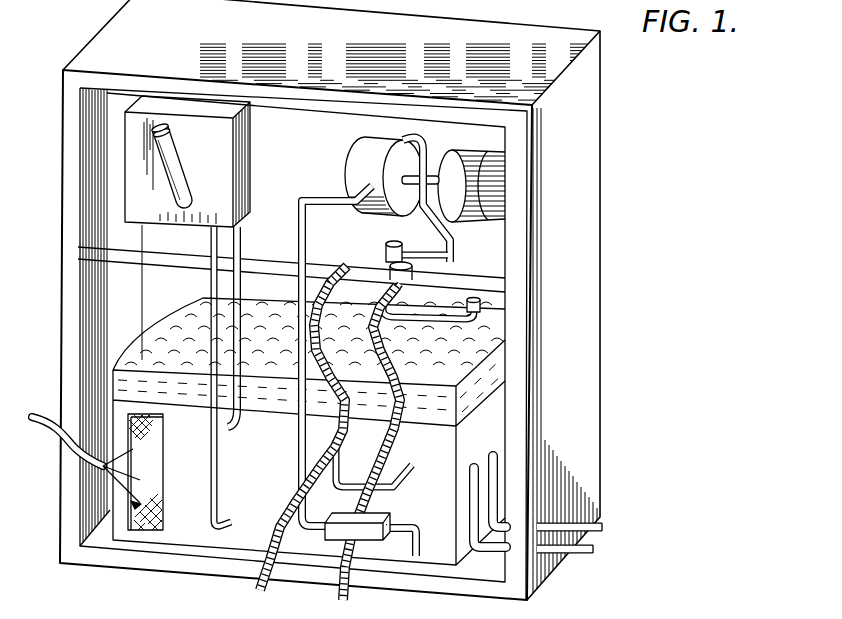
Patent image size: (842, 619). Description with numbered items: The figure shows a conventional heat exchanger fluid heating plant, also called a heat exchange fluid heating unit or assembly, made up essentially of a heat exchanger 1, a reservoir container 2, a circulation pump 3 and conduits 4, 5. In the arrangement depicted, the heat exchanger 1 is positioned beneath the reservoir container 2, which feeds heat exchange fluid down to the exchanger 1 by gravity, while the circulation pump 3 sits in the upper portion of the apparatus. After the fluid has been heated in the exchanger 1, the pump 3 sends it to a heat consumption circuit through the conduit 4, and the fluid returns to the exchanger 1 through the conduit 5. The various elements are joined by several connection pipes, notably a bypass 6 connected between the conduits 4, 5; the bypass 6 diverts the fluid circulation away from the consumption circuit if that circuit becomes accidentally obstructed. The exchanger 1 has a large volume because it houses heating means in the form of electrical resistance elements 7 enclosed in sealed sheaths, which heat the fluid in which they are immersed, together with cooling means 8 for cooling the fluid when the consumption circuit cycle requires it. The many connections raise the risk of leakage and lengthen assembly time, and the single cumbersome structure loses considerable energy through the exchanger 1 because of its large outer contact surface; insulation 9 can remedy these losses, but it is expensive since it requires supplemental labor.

The heat exchanger 1 is at (245, 518).
The reservoir container 2 is at (143, 212).
The circulation pump 3 is at (367, 157).
The conduit 4 is at (372, 500).
The conduit 5 is at (293, 528).
The bypass 6 is at (401, 243).
The electrical resistance elements 7 is at (70, 443).
The cooling means 8 is at (580, 567).
The insulation 9 is at (483, 340).